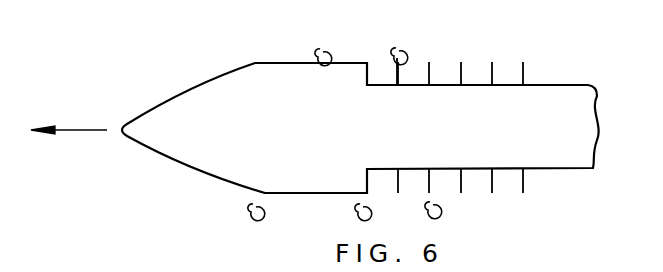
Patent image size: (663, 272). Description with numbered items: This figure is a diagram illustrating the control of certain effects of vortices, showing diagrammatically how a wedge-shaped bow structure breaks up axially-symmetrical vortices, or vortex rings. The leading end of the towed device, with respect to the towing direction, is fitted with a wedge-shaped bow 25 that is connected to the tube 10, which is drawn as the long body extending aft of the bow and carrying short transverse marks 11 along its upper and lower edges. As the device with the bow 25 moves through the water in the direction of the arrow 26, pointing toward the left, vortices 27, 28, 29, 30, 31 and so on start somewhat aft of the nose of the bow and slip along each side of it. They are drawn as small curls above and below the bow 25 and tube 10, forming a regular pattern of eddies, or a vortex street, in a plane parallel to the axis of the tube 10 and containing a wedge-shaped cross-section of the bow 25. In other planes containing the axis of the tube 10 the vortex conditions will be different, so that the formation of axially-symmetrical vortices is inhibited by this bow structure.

The tube 10 is at (570, 84).
The fins / ribs 11 is at (493, 72).
The wedge-shaped bow 25 is at (250, 66).
The arrow 26 is at (72, 128).
The vortex 27 is at (258, 211).
The vortex 28 is at (325, 50).
The vortex 29 is at (364, 211).
The vortex 30 is at (400, 44).
The vortex 31 is at (434, 210).